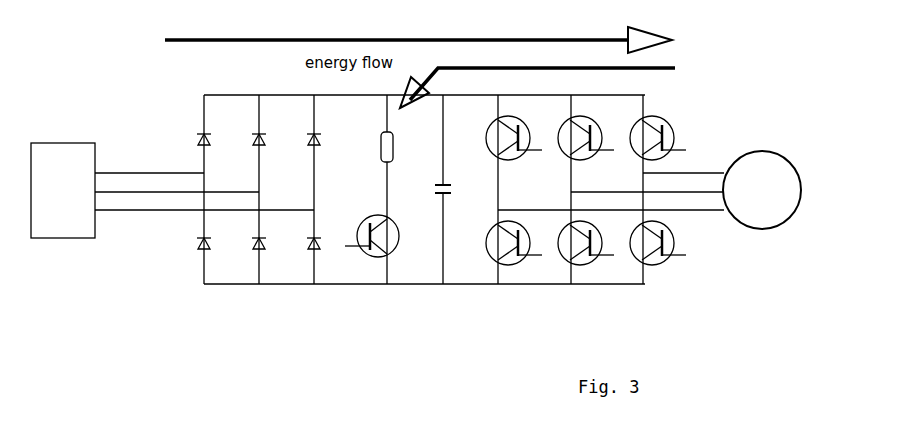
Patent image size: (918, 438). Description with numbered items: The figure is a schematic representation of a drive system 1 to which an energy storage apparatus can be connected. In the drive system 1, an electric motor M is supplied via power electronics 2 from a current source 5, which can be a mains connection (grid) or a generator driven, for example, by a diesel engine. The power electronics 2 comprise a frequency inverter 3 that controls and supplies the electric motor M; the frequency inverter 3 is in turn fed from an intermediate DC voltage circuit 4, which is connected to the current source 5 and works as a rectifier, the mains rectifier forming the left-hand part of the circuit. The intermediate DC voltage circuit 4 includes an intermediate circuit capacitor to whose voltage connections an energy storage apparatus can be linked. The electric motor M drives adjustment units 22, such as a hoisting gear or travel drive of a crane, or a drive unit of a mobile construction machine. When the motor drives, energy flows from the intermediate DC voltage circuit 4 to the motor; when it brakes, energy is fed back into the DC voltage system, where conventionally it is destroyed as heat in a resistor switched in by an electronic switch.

The drive system 1 is at (688, 100).
The power electronics 2 is at (392, 324).
The frequency inverter 3 is at (484, 297).
The intermediate DC voltage circuit 4 is at (418, 278).
The current source 5 is at (70, 256).
The adjustment units 22 is at (762, 223).